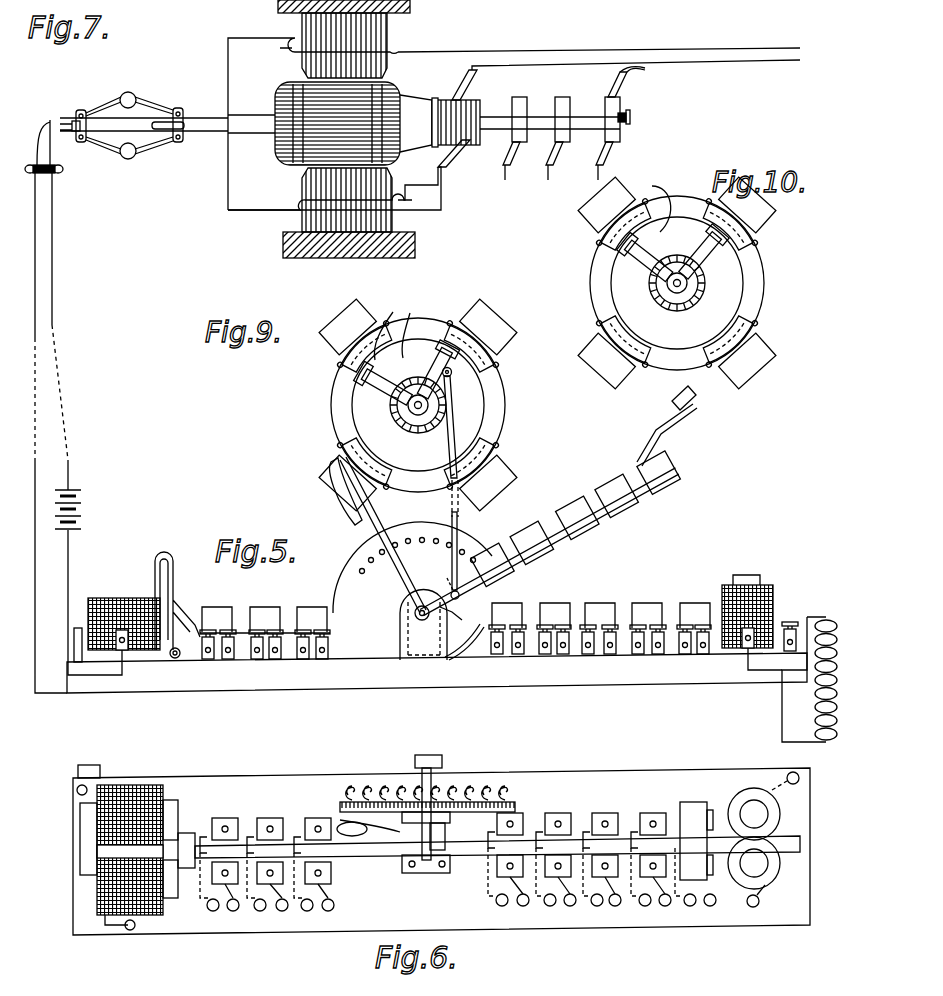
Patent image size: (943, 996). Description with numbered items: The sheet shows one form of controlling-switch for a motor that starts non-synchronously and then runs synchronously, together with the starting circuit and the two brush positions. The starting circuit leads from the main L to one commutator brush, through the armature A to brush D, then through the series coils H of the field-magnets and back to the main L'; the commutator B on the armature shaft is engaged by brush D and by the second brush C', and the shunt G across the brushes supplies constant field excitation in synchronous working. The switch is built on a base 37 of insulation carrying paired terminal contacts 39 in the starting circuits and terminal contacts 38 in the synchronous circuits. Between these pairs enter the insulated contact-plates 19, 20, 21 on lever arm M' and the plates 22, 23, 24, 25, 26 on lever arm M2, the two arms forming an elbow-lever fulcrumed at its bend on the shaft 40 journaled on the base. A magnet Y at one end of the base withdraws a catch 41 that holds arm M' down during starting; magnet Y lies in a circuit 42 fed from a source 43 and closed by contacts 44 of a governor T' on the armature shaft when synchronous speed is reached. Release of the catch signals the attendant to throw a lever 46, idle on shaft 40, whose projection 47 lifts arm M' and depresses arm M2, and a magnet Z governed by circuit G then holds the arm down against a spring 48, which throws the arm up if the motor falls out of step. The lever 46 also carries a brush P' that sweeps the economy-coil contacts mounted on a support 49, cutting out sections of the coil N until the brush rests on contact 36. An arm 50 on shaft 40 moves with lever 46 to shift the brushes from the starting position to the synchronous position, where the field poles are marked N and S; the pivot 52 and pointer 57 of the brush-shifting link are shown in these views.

In FIG. 7, the armature A is at (377, 123).
In FIG. 7, the commutator B is at (457, 153).
In FIG. 7, the upper brush C' is at (472, 85).
In FIG. 7, the brush D is at (446, 172).
In FIG. 7, the series coils H is at (342, 126).
In FIG. 7, the main L is at (636, 67).
In FIG. 7, the main L' is at (599, 31).
In FIG. 7, the governor T' is at (130, 113).
In FIG. 7, the contacts 44 is at (44, 134).
In FIG. 7, the circuit 42 is at (55, 317).
In FIG. 5, the circuit 42 is at (52, 461).
In FIG. 5, the current source 43 is at (80, 494).
In FIG. 10, the economy-coil N is at (679, 281).
In FIG. 9, the economy-coil N is at (415, 403).
In FIG. 10, the south pole field magnet S is at (687, 297).
In FIG. 9, the south pole field magnet S is at (437, 413).
In FIG. 9, the pivot of lever 52 is at (458, 443).
In FIG. 5, the base 37 is at (437, 673).
In FIG. 6, the base 37 is at (497, 877).
In FIG. 5, the magnet Y is at (117, 615).
In FIG. 6, the magnet Y is at (120, 800).
In FIG. 5, the magnet Z is at (752, 611).
In FIG. 5, the shunt G is at (809, 679).
In FIG. 5, the catch 41 is at (176, 600).
In FIG. 6, the catch 41 is at (200, 898).
In FIG. 5, the contact-plate 21 is at (208, 630).
In FIG. 6, the contact-plate 21 is at (205, 840).
In FIG. 5, the terminal contacts 39 is at (215, 615).
In FIG. 6, the terminal contacts 39 is at (238, 918).
In FIG. 5, the contact-plate 20 is at (265, 612).
In FIG. 6, the contact-plate 20 is at (262, 835).
In FIG. 5, the contact-plate 19 is at (320, 612).
In FIG. 6, the contact-plate 19 is at (308, 835).
In FIG. 5, the lever arm M' is at (265, 600).
In FIG. 6, the lever arm M' is at (179, 879).
In FIG. 5, the brush P' is at (412, 567).
In FIG. 6, the brush P' is at (370, 845).
In FIG. 5, the shaft 40 is at (423, 625).
In FIG. 6, the shaft 40 is at (422, 782).
In FIG. 5, the projection 47 is at (418, 590).
In FIG. 6, the projection 47 is at (430, 846).
In FIG. 5, the lever 46 is at (335, 487).
In FIG. 6, the lever 46 is at (352, 829).
In FIG. 5, the lever arm M2 is at (545, 535).
In FIG. 6, the lever arm M2 is at (473, 879).
In FIG. 5, the contact-plate 24 is at (490, 560).
In FIG. 6, the contact-plate 24 is at (484, 860).
In FIG. 5, the contact-plate 23 is at (530, 545).
In FIG. 6, the contact-plate 23 is at (530, 838).
In FIG. 5, the contact-plate 22 is at (590, 540).
In FIG. 6, the contact-plate 22 is at (580, 838).
In FIG. 5, the contact-plate 25 is at (628, 517).
In FIG. 6, the contact-plate 25 is at (625, 836).
In FIG. 5, the contact-plate 26 is at (666, 495).
In FIG. 6, the contact-plate 26 is at (668, 835).
In FIG. 5, the pointer 57 is at (458, 520).
In FIG. 5, the arm 50 is at (445, 577).
In FIG. 6, the arm 50 is at (439, 756).
In FIG. 5, the contact 36 is at (462, 607).
In FIG. 5, the spring 48 is at (475, 640).
In FIG. 5, the terminal contacts 38 is at (528, 612).
In FIG. 6, the terminal contacts 38 is at (600, 815).
In FIG. 6, the support 49 is at (345, 800).